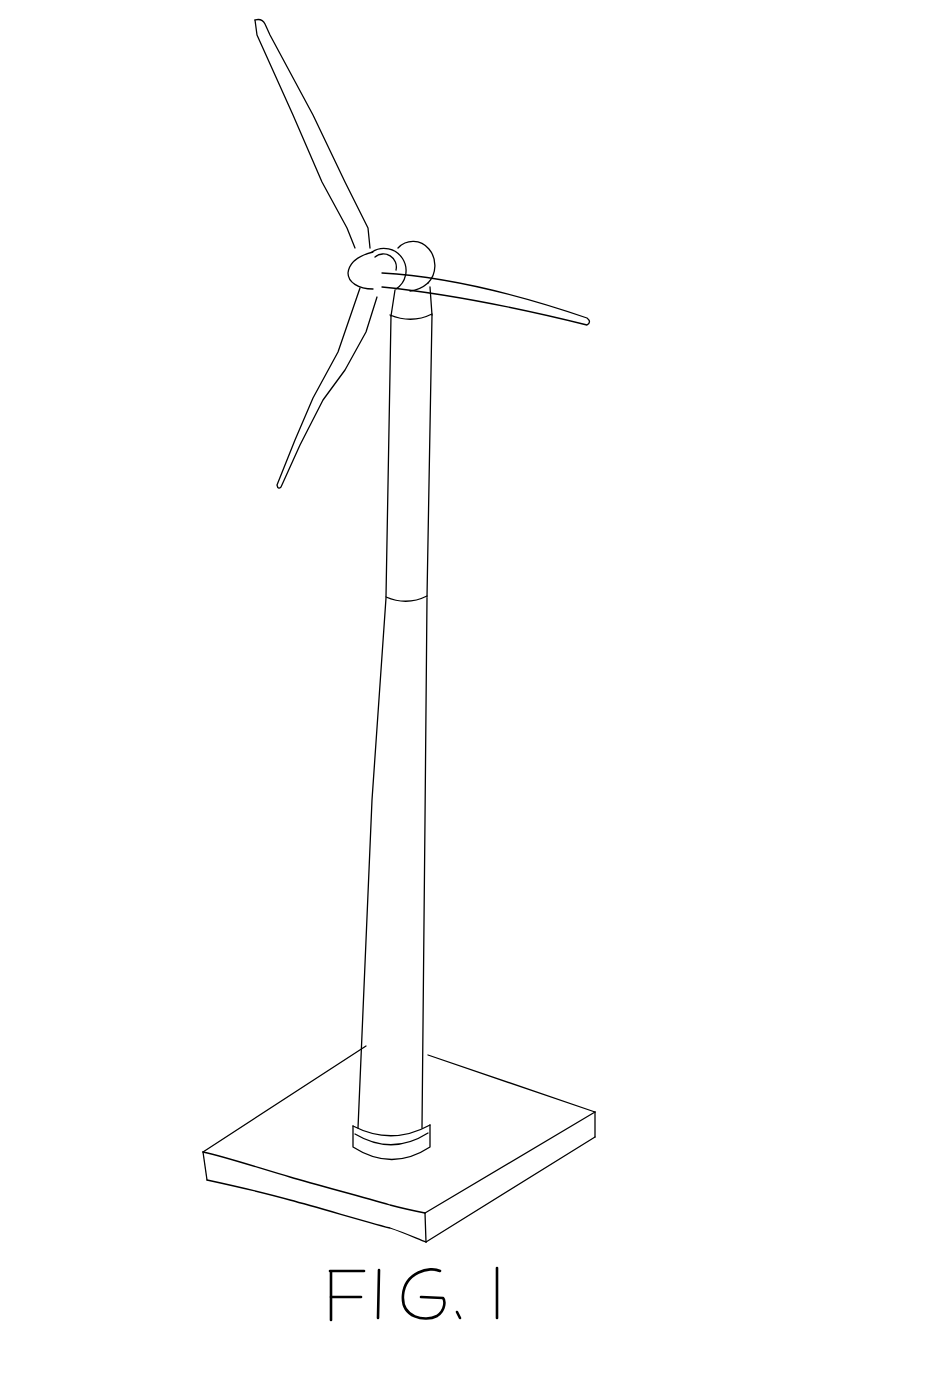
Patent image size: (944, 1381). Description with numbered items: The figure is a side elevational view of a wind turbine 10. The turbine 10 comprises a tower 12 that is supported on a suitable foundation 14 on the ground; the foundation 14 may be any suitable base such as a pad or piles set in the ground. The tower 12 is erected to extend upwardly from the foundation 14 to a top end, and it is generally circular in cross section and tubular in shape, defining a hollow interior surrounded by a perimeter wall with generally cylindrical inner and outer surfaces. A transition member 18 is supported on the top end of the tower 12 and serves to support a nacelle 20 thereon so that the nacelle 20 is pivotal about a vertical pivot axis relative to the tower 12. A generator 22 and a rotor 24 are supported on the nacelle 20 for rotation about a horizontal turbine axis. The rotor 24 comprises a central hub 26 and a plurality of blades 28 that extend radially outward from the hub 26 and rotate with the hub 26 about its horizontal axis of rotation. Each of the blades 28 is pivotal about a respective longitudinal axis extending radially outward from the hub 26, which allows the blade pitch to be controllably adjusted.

The wind turbine 10 is at (87, 312).
The tower 12 is at (428, 767).
The foundation 14 is at (540, 1088).
The transition member 18 is at (425, 308).
The nacelle 20 is at (427, 250).
The generator 22 is at (395, 247).
The rotor 24 is at (341, 265).
The central hub 26 is at (372, 265).
The blades 28 is at (303, 92).